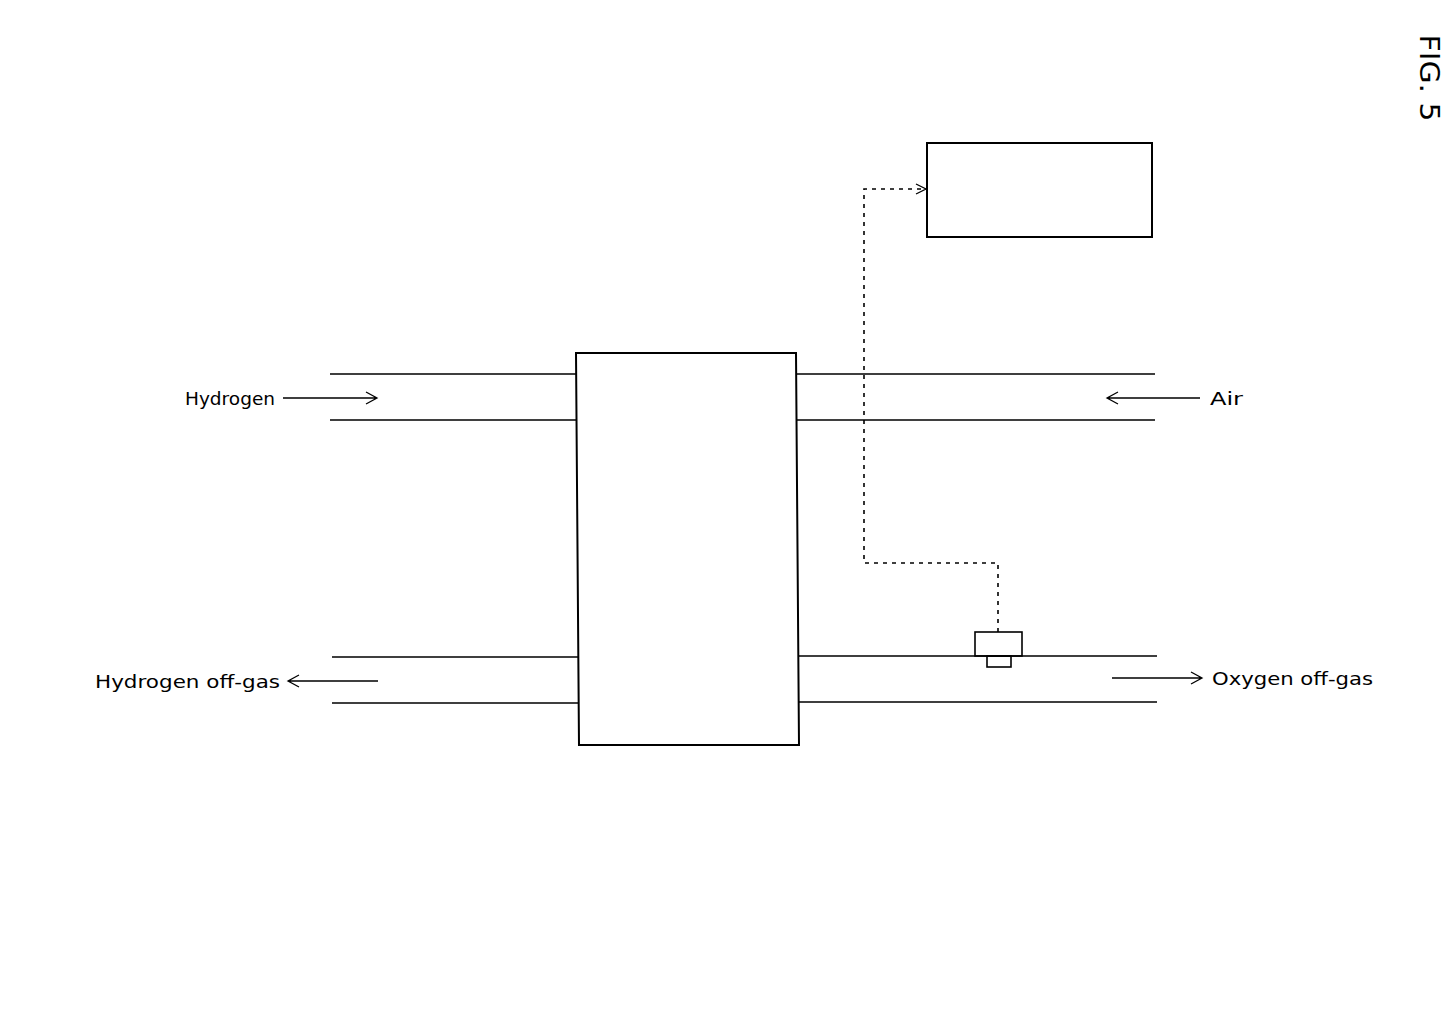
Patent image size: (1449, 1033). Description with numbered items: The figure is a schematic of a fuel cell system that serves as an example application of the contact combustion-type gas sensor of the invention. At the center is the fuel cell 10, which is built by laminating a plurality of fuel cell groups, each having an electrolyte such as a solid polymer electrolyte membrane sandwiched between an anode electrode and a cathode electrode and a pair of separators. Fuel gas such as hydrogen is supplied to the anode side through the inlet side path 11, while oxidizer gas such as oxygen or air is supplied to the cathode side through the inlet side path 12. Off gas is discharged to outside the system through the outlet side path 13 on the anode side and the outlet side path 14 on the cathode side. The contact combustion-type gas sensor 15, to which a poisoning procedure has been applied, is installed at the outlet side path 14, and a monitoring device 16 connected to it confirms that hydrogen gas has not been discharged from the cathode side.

The fuel cell 10 is at (577, 497).
The inlet side path 11 is at (470, 373).
The inlet side path 12 is at (1025, 373).
The outlet side path 13 is at (468, 656).
The outlet side path 14 is at (1113, 655).
The contact combustion-type gas sensor 15 is at (1008, 630).
The monitoring device 16 is at (1033, 142).